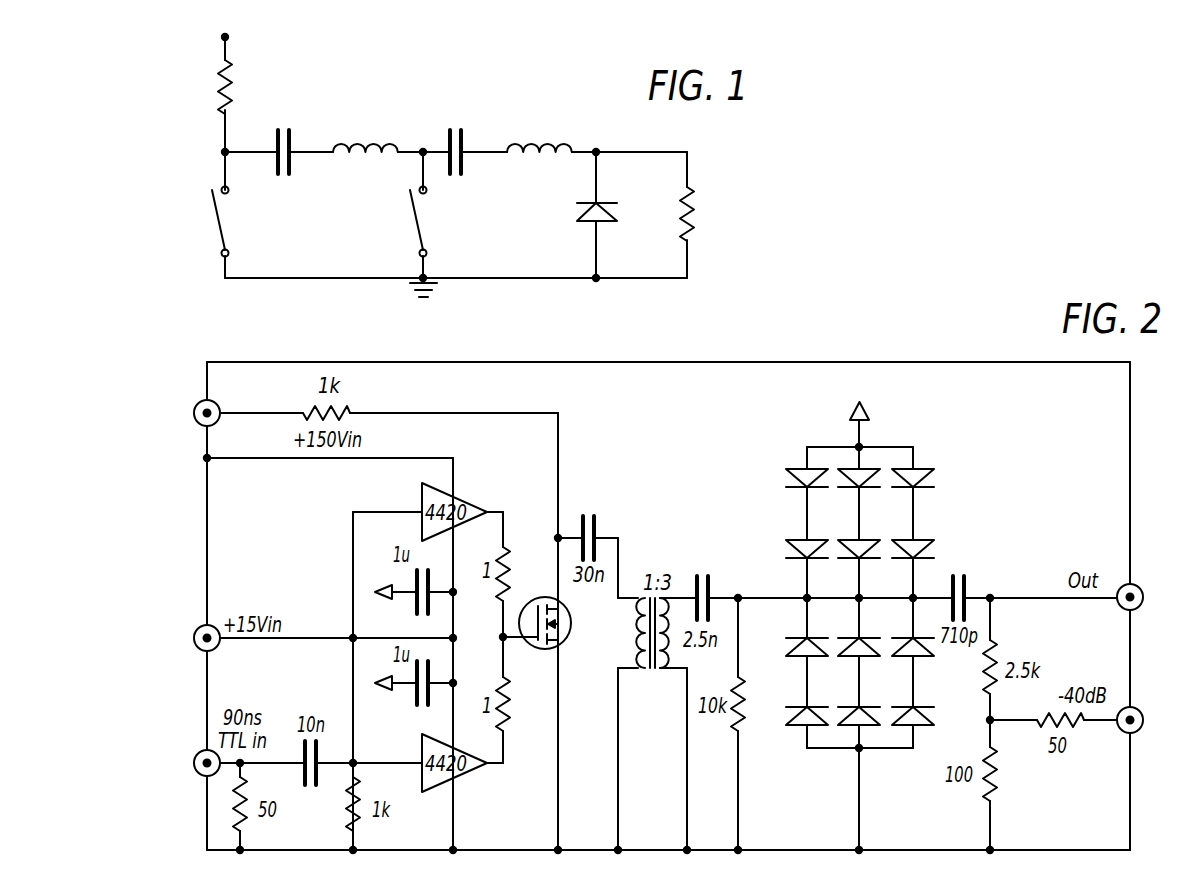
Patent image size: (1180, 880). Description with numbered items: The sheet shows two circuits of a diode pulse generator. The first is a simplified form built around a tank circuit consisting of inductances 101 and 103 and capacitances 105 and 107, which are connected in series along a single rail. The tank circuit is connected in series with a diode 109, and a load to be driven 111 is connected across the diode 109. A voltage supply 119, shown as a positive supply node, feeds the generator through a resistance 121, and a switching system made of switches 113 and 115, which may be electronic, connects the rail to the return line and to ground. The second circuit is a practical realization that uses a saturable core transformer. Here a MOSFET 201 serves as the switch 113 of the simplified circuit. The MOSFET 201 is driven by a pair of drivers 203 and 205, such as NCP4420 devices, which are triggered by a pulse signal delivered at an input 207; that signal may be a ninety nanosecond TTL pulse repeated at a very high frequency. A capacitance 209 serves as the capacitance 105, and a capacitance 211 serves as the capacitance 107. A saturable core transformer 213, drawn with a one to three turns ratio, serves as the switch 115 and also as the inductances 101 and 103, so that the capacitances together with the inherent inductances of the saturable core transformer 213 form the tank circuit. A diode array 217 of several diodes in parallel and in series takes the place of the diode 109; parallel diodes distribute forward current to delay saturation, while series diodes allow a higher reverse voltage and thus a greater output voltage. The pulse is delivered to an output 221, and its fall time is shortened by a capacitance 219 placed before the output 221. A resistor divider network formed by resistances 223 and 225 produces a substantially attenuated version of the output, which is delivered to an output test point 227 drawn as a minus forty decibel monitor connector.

In FIG. 1, the inductance 101 is at (353, 140).
In FIG. 1, the inductance 103 is at (540, 140).
In FIG. 1, the capacitance 105 is at (292, 136).
In FIG. 1, the capacitance 107 is at (447, 138).
In FIG. 1, the diode 109 is at (588, 225).
In FIG. 1, the load to be driven 111 is at (692, 214).
In FIG. 1, the switch 113 is at (217, 218).
In FIG. 1, the switch 115 is at (410, 218).
In FIG. 1, the voltage supply 119 is at (190, 31).
In FIG. 1, the resistance 121 is at (234, 92).
In FIG. 2, the MOSFET 201 is at (539, 598).
In FIG. 2, the driver 203 is at (422, 498).
In FIG. 2, the driver 205 is at (470, 790).
In FIG. 2, the input 207 is at (195, 753).
In FIG. 2, the capacitance 209 is at (600, 521).
In FIG. 2, the capacitance 211 is at (690, 575).
In FIG. 2, the saturable core transformer 213 is at (650, 672).
In FIG. 2, the diode array 217 is at (921, 470).
In FIG. 2, the capacitance 219 is at (968, 580).
In FIG. 2, the output 221 is at (1120, 588).
In FIG. 2, the resistance 223 is at (996, 661).
In FIG. 2, the resistance 225 is at (997, 770).
In FIG. 2, the output test point 227 is at (1120, 710).